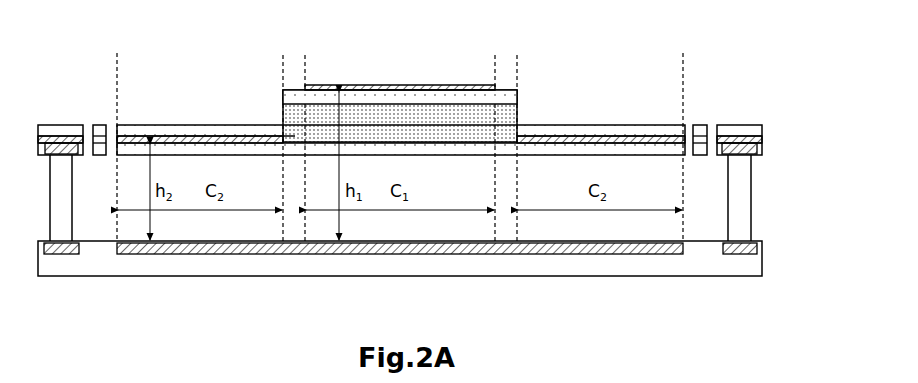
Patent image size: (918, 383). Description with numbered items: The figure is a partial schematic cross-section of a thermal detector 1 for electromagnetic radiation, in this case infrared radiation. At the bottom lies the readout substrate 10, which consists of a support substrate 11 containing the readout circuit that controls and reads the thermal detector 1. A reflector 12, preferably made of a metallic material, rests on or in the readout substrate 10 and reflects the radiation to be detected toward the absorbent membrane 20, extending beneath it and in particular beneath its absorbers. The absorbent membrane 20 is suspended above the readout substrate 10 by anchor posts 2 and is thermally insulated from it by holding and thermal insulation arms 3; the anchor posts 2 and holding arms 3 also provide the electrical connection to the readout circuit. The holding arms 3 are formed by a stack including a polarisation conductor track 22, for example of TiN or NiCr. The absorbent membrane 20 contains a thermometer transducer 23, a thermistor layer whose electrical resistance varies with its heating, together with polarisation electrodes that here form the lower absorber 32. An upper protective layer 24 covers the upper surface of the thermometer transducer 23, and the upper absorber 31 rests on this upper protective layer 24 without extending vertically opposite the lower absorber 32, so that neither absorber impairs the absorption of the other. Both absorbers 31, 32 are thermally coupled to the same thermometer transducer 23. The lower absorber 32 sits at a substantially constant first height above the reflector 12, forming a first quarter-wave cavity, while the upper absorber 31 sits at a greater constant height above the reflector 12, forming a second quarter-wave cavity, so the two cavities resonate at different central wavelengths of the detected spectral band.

The thermal detector 1 is at (93, 75).
The anchor posts 2 is at (753, 198).
The holding and thermal insulation arms 3 is at (700, 122).
The readout substrate 10 is at (462, 272).
The support substrate 11 is at (763, 258).
The reflector 12 is at (685, 249).
The absorbent membrane 20 is at (434, 82).
The polarisation conductor track 22 is at (620, 125).
The thermometer transducer 23 is at (520, 113).
The upper protective layer 24 is at (518, 98).
The upper absorber 31 is at (398, 83).
The lower absorber 32 is at (205, 135).